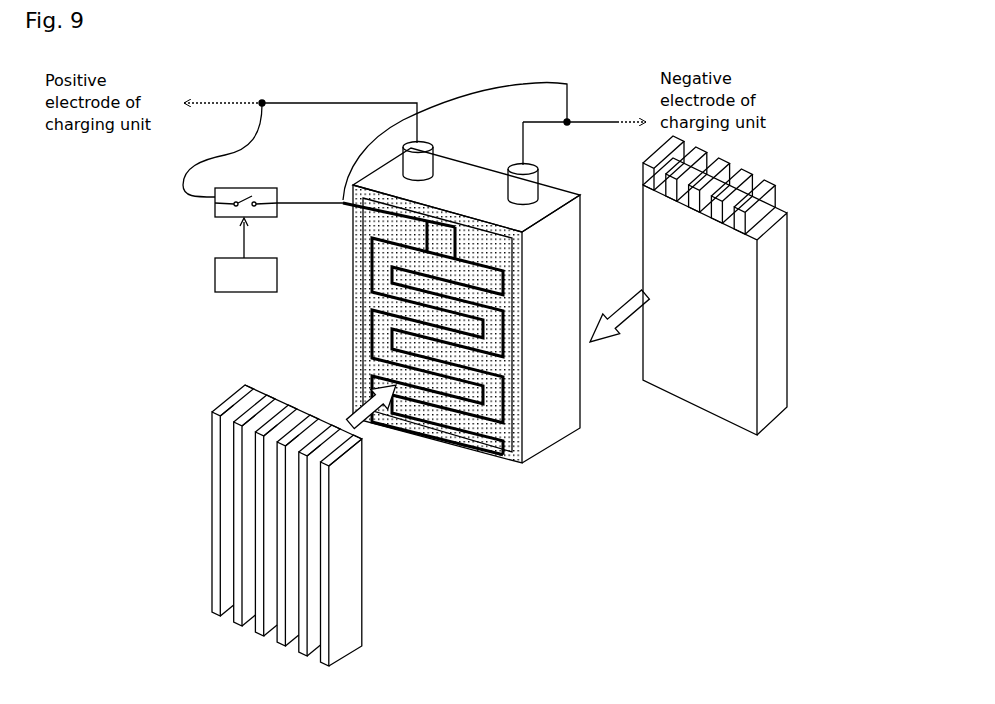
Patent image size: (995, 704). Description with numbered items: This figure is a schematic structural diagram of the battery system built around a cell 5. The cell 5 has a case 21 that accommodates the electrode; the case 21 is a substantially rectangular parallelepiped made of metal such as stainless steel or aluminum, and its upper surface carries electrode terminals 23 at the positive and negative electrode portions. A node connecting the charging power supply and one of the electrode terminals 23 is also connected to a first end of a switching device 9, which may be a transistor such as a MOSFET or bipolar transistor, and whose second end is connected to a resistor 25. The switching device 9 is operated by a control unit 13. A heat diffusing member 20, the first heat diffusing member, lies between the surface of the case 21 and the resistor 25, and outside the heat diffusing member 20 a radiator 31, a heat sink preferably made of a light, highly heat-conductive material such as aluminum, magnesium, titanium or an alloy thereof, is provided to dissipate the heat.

The cell 5 is at (482, 325).
The switching device 9 is at (268, 218).
The control unit 13 is at (268, 292).
The heat diffusing member 20 is at (350, 322).
The case 21 is at (482, 327).
The electrode terminals 23 is at (434, 150).
The resistor 25 is at (470, 450).
The radiator 31 is at (755, 412).